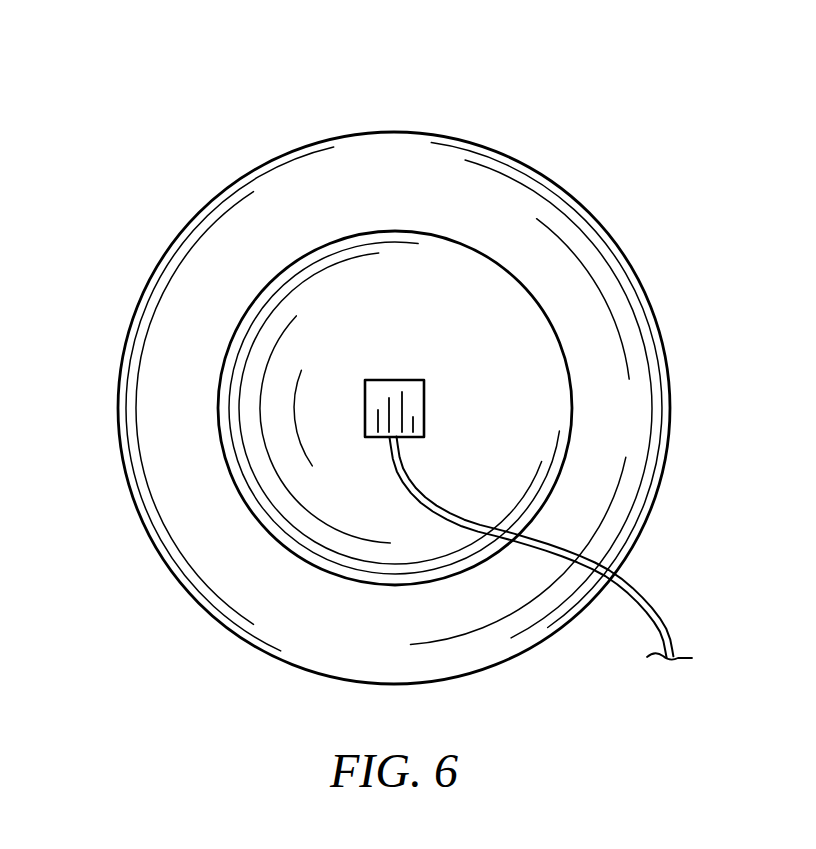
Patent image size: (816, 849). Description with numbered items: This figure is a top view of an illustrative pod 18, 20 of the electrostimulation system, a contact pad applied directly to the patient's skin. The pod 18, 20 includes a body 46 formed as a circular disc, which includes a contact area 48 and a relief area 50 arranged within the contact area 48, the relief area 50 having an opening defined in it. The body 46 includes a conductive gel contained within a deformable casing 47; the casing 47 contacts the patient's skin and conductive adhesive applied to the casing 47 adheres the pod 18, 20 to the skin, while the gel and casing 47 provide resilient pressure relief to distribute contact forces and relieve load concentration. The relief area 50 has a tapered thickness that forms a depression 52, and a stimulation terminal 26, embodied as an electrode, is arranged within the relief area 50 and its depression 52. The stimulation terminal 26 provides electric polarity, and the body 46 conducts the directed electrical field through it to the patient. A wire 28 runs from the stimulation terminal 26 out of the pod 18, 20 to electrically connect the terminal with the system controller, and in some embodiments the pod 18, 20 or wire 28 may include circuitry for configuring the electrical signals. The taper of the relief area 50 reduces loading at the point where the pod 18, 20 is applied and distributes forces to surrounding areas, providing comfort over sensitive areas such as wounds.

The pod 18 is at (422, 397).
The pod 20 is at (590, 162).
The deformable casing 47 is at (379, 118).
The body 46 is at (172, 197).
The contact area 48 is at (172, 400).
The relief area 50 is at (347, 460).
The depression 52 is at (312, 512).
The stimulation terminal 26 is at (440, 415).
The wire 28 is at (670, 600).